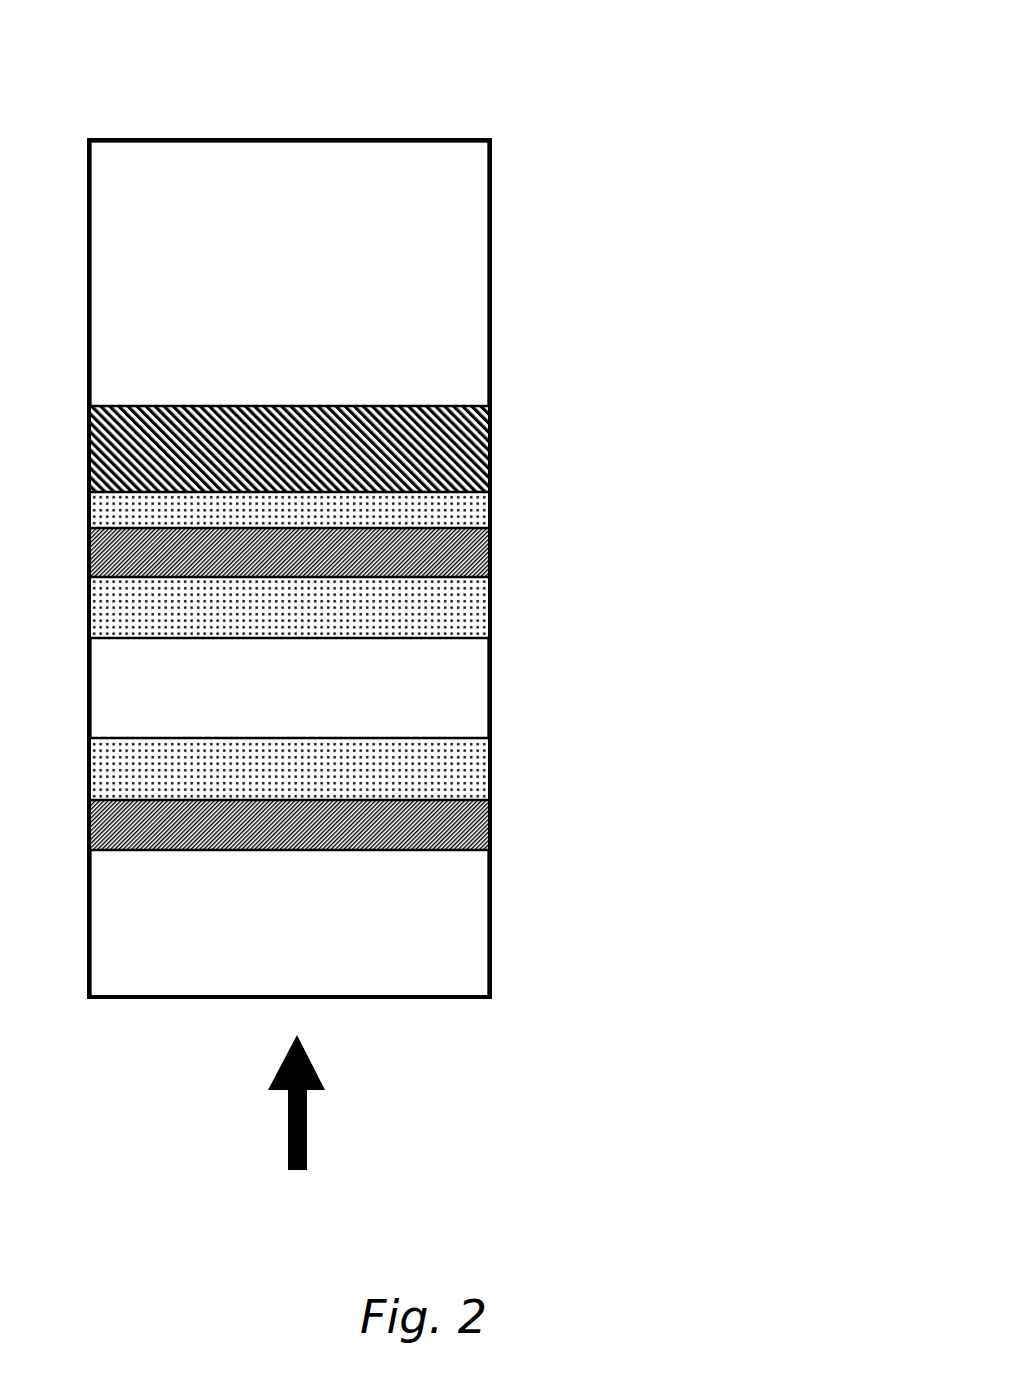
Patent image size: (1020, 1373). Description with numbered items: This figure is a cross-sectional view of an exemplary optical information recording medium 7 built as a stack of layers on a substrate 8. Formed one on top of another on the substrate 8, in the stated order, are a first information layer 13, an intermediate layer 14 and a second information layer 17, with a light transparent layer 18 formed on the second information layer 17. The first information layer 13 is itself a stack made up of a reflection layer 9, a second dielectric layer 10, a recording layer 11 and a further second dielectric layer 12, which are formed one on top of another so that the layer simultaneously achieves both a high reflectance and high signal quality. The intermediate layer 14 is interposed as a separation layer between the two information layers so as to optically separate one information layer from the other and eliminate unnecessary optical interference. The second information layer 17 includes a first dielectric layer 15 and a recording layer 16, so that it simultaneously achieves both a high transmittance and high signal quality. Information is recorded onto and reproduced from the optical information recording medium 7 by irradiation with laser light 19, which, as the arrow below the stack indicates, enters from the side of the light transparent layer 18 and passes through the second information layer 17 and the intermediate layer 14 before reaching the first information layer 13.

The optical information recording medium 7 is at (448, 113).
The substrate 8 is at (463, 238).
The reflection layer 9 is at (452, 455).
The second dielectric layer 10 is at (452, 512).
The recording layer 11 is at (450, 552).
The second dielectric layer 12 is at (366, 607).
The first information layer 13 is at (439, 500).
The intermediate layer 14 is at (452, 700).
The first dielectric layer 15 is at (452, 774).
The recording layer 16 is at (453, 826).
The second information layer 17 is at (440, 801).
The light transparent layer 18 is at (452, 927).
The laser light 19 is at (337, 1102).